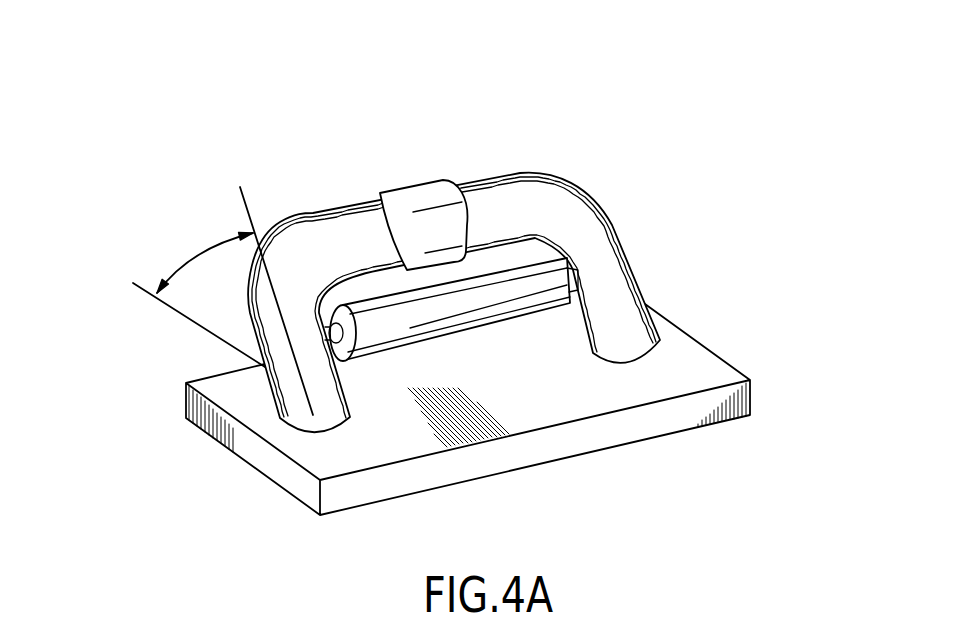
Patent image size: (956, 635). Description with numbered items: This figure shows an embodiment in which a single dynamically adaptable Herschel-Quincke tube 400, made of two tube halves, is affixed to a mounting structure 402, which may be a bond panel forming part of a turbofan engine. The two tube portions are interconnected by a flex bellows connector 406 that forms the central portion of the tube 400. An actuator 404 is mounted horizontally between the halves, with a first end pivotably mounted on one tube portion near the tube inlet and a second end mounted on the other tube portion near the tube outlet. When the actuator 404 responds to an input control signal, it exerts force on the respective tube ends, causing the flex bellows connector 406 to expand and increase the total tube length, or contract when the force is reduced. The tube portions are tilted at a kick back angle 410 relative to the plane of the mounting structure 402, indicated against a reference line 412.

The Herschel-Quincke tube 400 is at (648, 167).
The mounting structure 402 is at (727, 427).
The actuator 404 is at (500, 308).
The flex bellows connector 406 is at (437, 200).
The kick back angle 410 is at (197, 257).
The reference line 412 is at (195, 325).